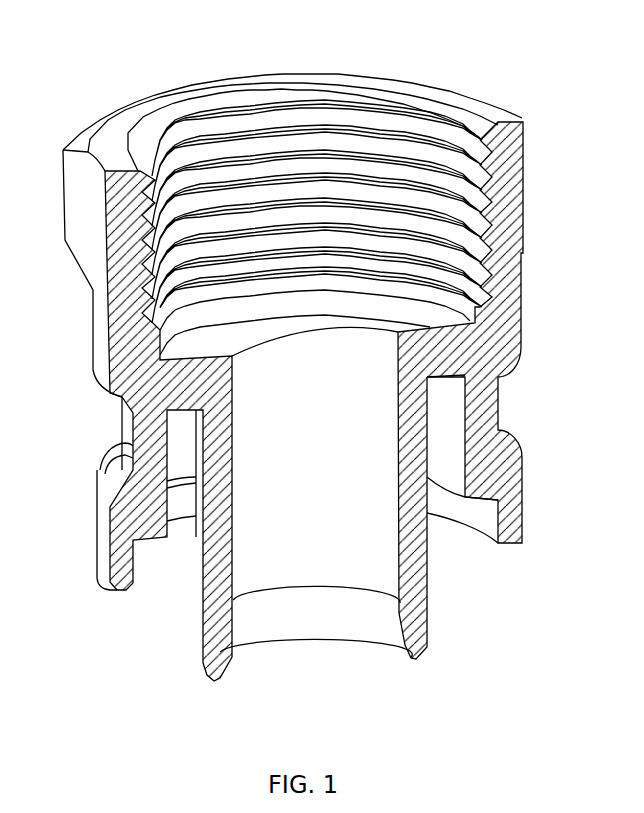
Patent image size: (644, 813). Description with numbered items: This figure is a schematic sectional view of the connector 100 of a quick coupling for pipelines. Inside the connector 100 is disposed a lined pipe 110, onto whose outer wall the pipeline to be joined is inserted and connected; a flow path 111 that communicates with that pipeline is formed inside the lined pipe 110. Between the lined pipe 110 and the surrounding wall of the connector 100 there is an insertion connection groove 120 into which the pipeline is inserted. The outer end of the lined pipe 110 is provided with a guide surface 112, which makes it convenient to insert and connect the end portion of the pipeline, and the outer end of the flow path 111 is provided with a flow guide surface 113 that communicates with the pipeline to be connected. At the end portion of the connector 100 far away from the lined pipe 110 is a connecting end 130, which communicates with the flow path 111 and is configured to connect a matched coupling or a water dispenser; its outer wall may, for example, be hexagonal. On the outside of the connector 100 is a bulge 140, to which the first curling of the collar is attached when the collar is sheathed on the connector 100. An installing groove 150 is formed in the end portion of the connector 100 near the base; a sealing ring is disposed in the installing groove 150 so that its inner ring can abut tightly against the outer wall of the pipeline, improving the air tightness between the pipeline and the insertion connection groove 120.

The connector 100 is at (122, 63).
The lined pipe 110 is at (360, 517).
The flow path 111 is at (377, 563).
The guide surface 112 is at (423, 652).
The flow guide surface 113 is at (315, 620).
The insertion connection groove 120 is at (442, 395).
The connecting end 130 is at (504, 213).
The bulge 140 is at (103, 517).
The installing groove 150 is at (489, 513).